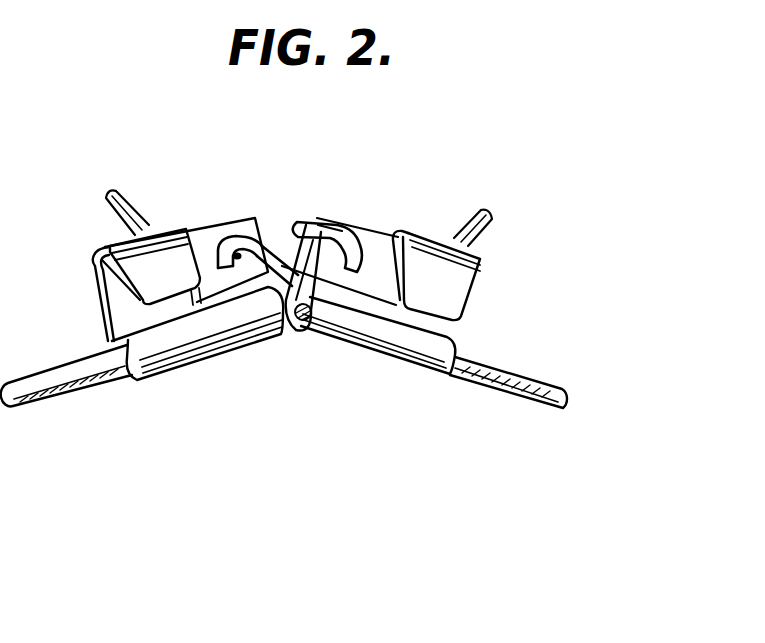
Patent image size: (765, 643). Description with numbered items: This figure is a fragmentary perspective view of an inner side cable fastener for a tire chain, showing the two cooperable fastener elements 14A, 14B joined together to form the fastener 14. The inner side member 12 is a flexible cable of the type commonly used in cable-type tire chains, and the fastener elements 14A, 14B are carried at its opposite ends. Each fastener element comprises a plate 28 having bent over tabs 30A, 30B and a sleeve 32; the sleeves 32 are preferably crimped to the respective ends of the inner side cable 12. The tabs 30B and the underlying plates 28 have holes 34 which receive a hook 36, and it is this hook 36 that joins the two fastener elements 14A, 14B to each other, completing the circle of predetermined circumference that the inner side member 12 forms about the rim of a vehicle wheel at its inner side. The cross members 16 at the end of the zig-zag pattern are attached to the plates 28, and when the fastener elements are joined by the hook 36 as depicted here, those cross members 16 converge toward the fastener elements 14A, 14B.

The inner side member 12 is at (50, 374).
The fastener 14 is at (281, 366).
The fastener element 14A is at (148, 389).
The fastener element 14B is at (396, 386).
The cross member 16 is at (141, 207).
The plate 28 is at (97, 286).
The bent over tab 30A is at (182, 232).
The bent over tab 30B is at (247, 222).
The sleeve 32 is at (195, 348).
The hole 34 is at (235, 267).
The hook 36 is at (274, 246).